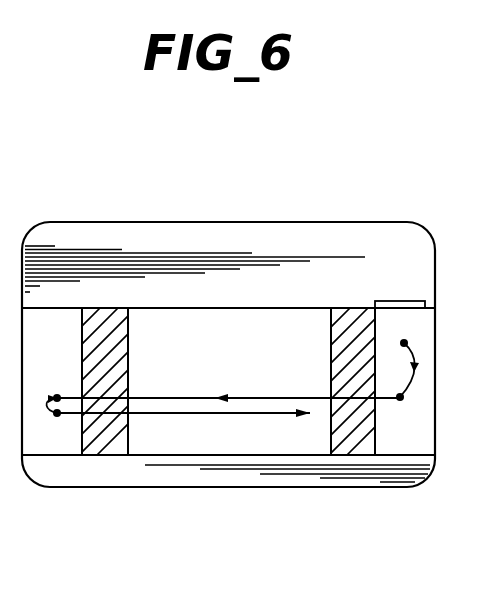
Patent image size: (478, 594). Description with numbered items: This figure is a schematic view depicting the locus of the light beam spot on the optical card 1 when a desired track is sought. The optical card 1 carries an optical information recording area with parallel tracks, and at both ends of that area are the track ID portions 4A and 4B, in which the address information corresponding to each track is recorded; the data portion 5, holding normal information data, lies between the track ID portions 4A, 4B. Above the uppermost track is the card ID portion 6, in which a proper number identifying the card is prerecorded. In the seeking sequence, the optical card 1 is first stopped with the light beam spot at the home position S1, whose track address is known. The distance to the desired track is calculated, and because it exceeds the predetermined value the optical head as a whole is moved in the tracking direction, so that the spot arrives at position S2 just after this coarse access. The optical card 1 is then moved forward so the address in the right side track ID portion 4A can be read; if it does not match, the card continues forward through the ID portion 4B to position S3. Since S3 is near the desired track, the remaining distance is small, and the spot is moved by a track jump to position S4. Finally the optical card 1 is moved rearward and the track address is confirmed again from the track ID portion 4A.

The optical card 1 is at (250, 222).
The track ID portion 4A is at (108, 440).
The track ID portion 4B is at (360, 435).
The data portion 5 is at (237, 435).
The card ID portion 6 is at (402, 301).
The home position S1 is at (417, 358).
The position after coarse access S2 is at (405, 413).
The position after forward movement S3 is at (53, 391).
The position after track jump S4 is at (53, 428).